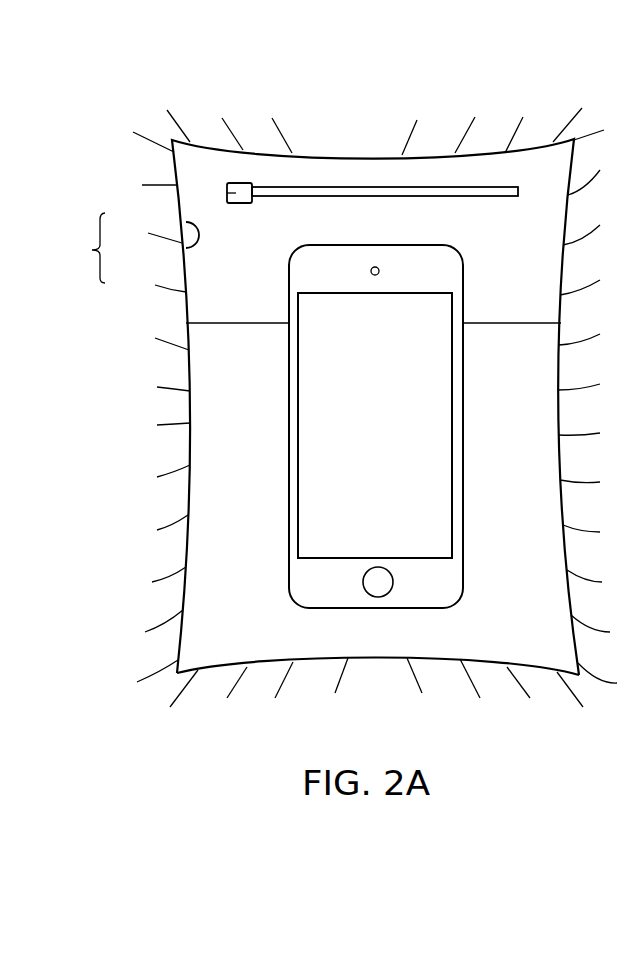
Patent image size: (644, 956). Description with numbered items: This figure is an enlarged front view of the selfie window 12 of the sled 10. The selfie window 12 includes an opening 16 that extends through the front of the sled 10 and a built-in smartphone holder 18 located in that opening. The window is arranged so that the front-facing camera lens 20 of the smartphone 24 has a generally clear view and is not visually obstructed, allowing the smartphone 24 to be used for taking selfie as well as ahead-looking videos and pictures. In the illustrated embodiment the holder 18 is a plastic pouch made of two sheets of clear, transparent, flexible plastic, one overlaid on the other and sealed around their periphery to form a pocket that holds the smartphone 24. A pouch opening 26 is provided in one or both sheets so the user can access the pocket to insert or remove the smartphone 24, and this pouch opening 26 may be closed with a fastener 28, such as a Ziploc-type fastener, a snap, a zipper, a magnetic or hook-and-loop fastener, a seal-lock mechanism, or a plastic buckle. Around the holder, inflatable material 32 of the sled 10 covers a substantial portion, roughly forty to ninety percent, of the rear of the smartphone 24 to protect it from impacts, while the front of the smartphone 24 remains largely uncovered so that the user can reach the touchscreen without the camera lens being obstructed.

The sled 10 is at (213, 738).
The selfie window 12 is at (83, 248).
The opening 16 is at (183, 245).
The smartphone holder 18 is at (213, 293).
The front-facing camera lens 20 is at (375, 267).
The smartphone 24 is at (362, 426).
The pouch opening 26 is at (448, 187).
The fastener 28 is at (223, 195).
The inflatable material 32 is at (213, 377).